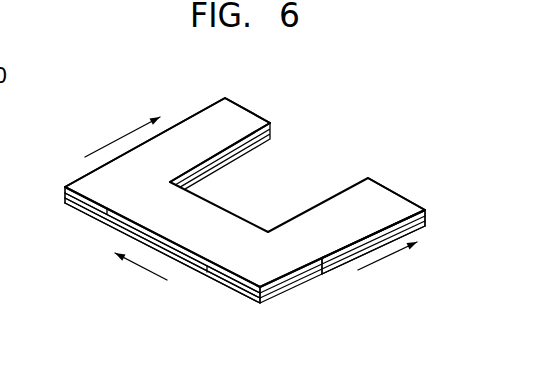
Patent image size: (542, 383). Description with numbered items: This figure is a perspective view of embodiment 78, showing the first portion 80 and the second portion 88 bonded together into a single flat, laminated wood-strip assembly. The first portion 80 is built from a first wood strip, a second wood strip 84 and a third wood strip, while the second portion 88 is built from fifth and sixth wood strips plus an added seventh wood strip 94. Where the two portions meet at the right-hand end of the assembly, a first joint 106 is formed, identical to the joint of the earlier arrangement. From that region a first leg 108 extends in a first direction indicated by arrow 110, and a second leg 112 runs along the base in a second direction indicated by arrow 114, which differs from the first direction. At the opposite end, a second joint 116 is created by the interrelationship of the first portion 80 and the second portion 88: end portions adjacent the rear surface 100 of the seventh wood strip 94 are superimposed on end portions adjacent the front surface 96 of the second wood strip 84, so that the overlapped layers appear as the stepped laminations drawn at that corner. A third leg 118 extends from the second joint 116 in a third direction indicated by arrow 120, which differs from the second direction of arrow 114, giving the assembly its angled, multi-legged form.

The embodiment 78 is at (310, 148).
The first portion 80 is at (425, 226).
The second wood strip 84 is at (118, 230).
The second portion 88 is at (425, 210).
The seventh wood strip 94 is at (213, 137).
The front surface 96 is at (65, 196).
The rear surface 100 is at (97, 209).
The first joint 106 is at (260, 303).
The first leg 108 is at (347, 264).
The arrow 110 is at (385, 258).
The second leg 112 is at (185, 266).
The arrow 114 is at (143, 268).
The second joint 116 is at (65, 187).
The third leg 118 is at (187, 119).
The arrow 120 is at (118, 139).